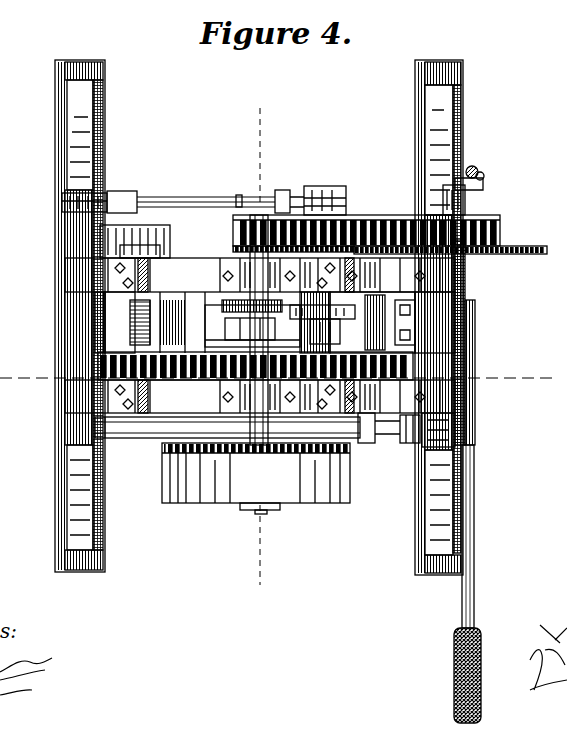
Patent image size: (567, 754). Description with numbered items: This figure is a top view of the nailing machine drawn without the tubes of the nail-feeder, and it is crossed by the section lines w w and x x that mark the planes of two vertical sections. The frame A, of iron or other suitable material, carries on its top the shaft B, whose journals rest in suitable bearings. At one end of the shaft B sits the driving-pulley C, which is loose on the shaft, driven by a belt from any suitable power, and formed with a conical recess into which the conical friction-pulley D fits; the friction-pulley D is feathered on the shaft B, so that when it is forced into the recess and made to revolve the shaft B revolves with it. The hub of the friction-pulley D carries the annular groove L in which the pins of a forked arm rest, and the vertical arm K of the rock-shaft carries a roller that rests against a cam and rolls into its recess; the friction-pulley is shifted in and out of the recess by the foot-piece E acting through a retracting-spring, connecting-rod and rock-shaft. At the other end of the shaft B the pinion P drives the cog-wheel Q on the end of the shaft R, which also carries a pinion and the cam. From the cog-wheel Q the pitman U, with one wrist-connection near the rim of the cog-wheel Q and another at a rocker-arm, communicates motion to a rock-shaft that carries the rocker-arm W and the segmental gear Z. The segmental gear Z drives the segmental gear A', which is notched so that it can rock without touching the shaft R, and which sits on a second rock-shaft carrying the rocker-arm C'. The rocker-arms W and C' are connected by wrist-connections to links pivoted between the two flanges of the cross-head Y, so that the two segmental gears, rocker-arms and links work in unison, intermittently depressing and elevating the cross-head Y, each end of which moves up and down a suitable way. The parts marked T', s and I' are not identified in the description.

The frame A is at (264, 317).
The segmental gear A' is at (469, 342).
The shaft B is at (247, 300).
The driving-pulley C is at (256, 476).
The rocker-arm C' is at (322, 316).
The conical friction-pulley D is at (247, 436).
The foot-piece E is at (476, 584).
The vertical arm K is at (408, 444).
The annular groove L is at (260, 425).
The pinion P is at (240, 205).
The cog-wheel Q is at (366, 222).
The shaft R is at (420, 297).
The pinion T' is at (143, 241).
The pitman U is at (204, 196).
The rocker-arm W is at (197, 322).
The cross-head Y is at (240, 307).
The segmental gear Z is at (97, 358).
The rack s is at (354, 251).
The rack bar I' is at (450, 243).
The line x x is at (258, 345).
The line w w is at (283, 378).